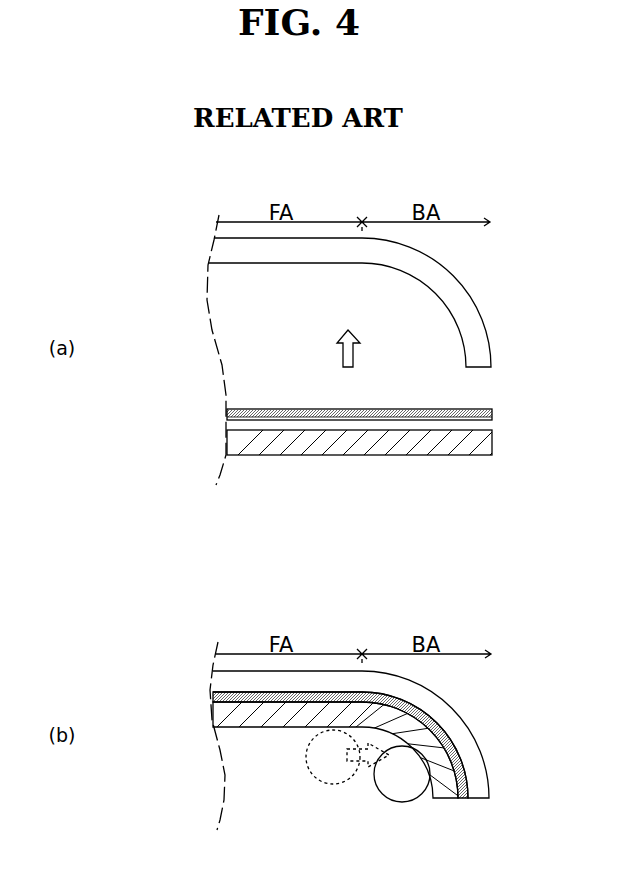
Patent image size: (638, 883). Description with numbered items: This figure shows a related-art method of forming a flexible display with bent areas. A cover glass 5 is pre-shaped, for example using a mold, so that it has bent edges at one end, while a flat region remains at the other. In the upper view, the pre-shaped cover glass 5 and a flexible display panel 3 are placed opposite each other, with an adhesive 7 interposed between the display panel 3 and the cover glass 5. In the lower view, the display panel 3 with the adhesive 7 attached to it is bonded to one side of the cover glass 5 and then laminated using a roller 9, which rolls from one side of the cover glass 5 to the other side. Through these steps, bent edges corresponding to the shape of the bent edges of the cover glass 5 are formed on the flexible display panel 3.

The cover glass 5 is at (470, 356).
The adhesive 7 is at (493, 412).
The flexible display panel 3 is at (490, 440).
The roller 9 is at (398, 790).